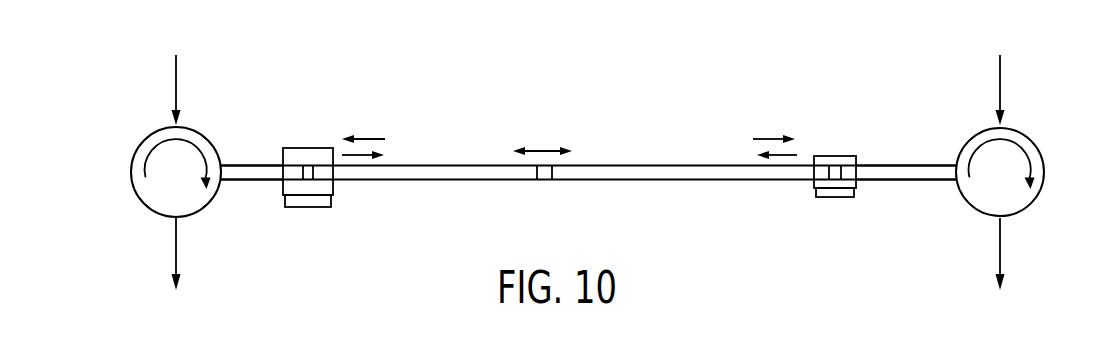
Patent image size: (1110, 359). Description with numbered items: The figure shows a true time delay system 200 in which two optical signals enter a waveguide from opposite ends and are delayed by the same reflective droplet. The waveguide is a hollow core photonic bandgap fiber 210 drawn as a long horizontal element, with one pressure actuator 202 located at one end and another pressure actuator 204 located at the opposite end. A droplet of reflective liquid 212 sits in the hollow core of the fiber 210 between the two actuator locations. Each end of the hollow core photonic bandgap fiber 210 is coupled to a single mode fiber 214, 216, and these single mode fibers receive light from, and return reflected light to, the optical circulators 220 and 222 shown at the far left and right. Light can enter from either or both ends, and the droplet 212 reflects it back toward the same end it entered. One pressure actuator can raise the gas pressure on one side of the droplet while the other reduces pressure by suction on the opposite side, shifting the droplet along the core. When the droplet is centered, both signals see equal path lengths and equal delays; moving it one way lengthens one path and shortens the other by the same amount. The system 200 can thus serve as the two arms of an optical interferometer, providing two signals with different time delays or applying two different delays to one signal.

The true time delay system 200 is at (659, 62).
The pressure actuator 202 is at (303, 147).
The pressure actuator 204 is at (833, 155).
The hollow core photonic bandgap fiber 210 is at (630, 173).
The droplet of reflective liquid 212 is at (543, 182).
The single mode fiber 214 is at (252, 172).
The single mode fiber 216 is at (917, 173).
The optical circulator 220 is at (131, 178).
The optical circulator 222 is at (1043, 172).